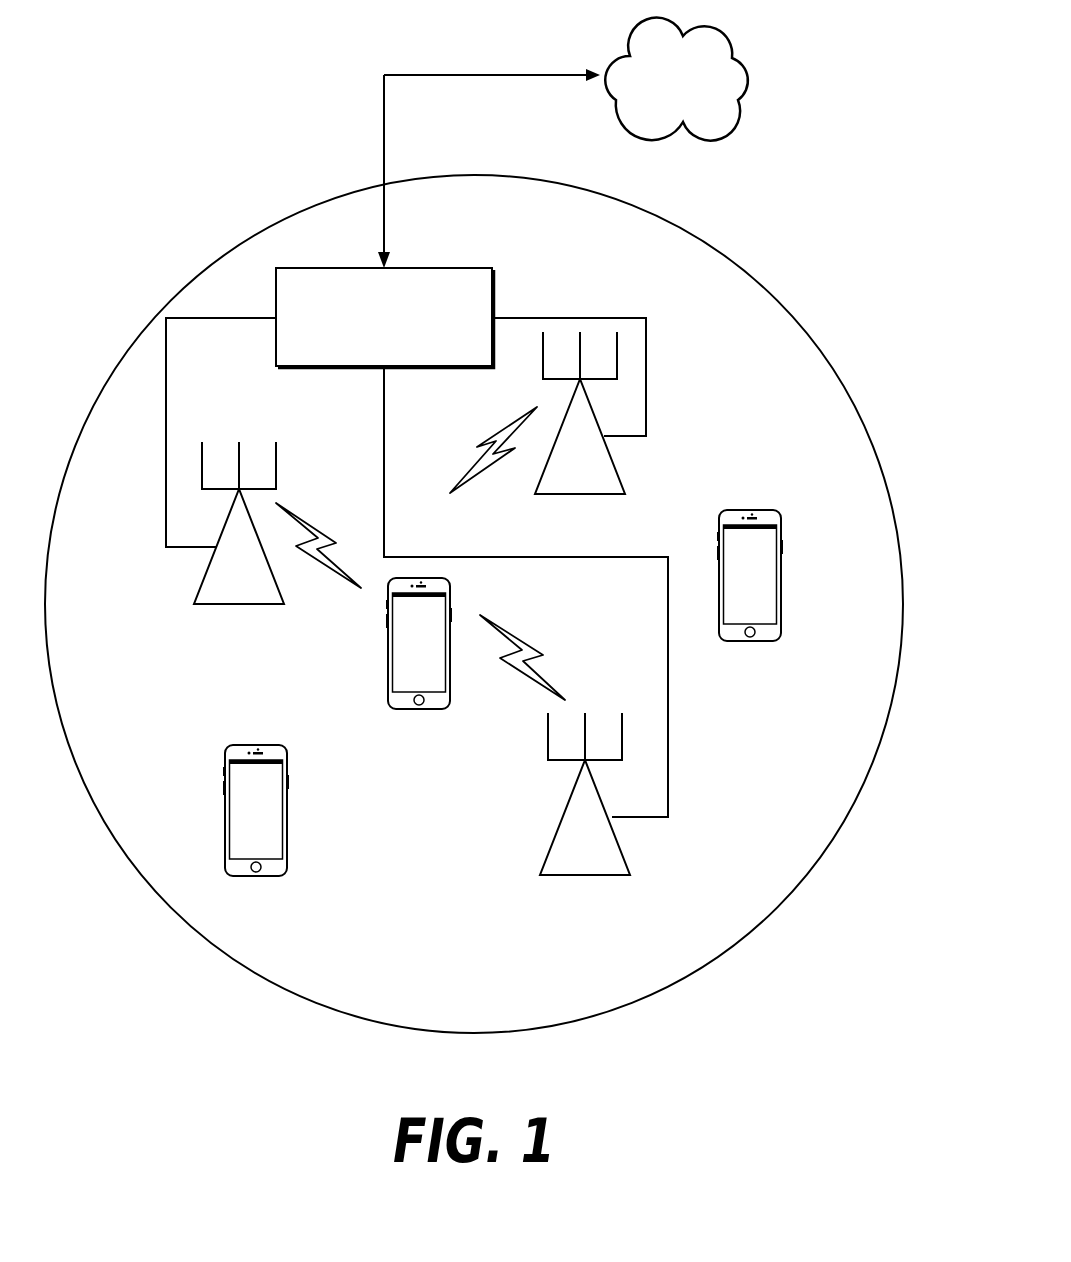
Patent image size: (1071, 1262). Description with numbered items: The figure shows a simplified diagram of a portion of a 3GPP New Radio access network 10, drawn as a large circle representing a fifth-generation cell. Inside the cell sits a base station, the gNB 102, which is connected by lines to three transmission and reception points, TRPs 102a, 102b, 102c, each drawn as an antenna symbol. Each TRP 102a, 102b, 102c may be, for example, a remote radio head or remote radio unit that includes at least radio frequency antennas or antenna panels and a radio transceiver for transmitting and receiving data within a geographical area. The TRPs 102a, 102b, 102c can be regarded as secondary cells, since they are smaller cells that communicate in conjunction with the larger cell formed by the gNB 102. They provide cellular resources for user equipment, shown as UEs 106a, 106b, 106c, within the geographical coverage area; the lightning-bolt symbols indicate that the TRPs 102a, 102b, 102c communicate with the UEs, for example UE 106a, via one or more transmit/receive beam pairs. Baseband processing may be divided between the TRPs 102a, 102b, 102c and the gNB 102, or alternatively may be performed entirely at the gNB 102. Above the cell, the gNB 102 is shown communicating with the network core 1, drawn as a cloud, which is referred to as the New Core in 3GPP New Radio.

The network core 1 is at (673, 105).
The 3GPP New Radio access network 10 is at (786, 201).
The gNB 102 is at (367, 329).
The transmission and reception point 102a is at (217, 664).
The transmission and reception point 102b is at (558, 554).
The transmission and reception point 102c is at (563, 933).
The user equipment 106a is at (397, 768).
The user equipment 106b is at (234, 936).
The user equipment 106c is at (728, 701).